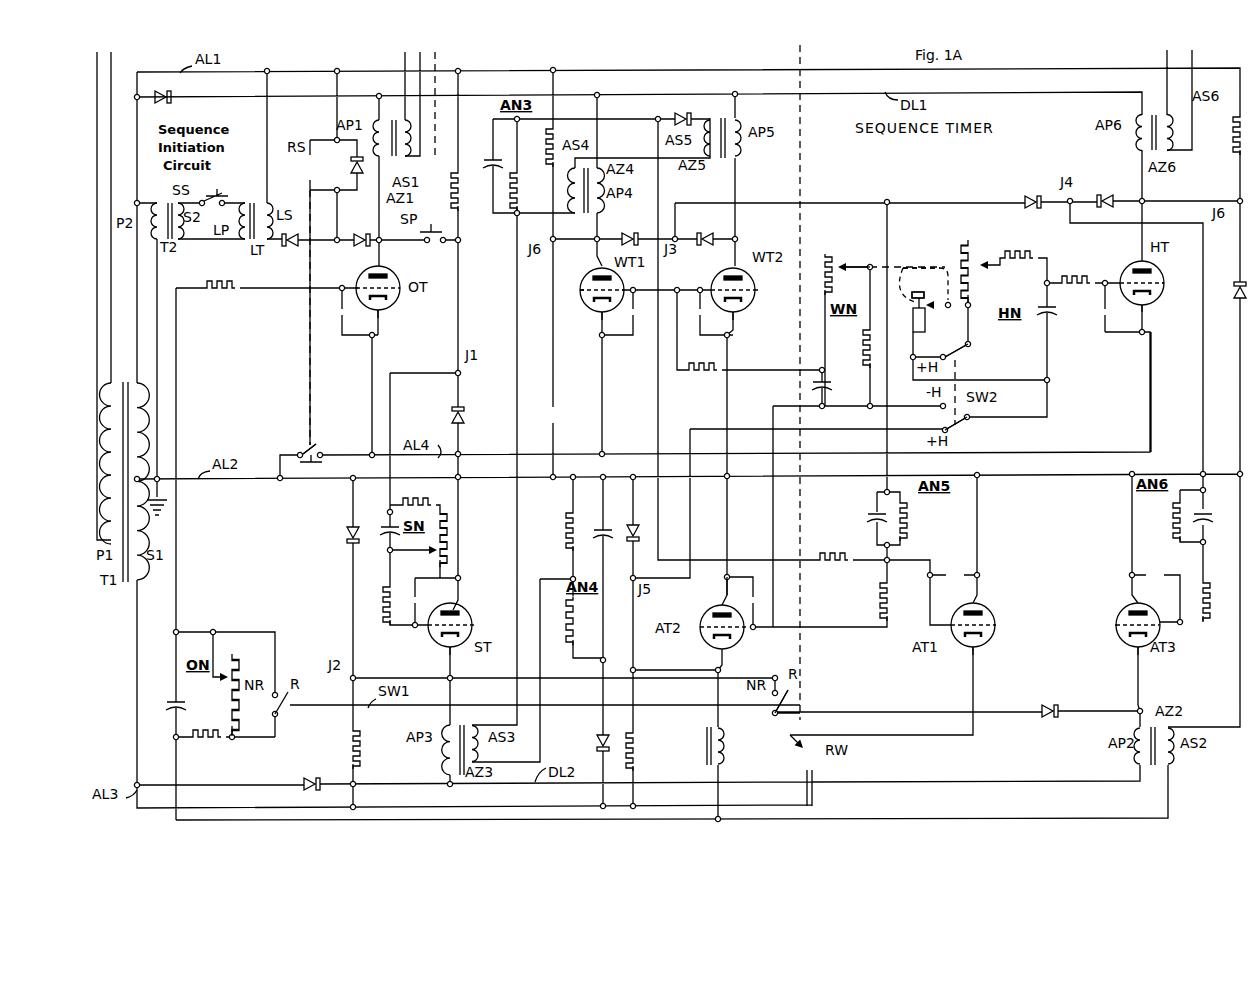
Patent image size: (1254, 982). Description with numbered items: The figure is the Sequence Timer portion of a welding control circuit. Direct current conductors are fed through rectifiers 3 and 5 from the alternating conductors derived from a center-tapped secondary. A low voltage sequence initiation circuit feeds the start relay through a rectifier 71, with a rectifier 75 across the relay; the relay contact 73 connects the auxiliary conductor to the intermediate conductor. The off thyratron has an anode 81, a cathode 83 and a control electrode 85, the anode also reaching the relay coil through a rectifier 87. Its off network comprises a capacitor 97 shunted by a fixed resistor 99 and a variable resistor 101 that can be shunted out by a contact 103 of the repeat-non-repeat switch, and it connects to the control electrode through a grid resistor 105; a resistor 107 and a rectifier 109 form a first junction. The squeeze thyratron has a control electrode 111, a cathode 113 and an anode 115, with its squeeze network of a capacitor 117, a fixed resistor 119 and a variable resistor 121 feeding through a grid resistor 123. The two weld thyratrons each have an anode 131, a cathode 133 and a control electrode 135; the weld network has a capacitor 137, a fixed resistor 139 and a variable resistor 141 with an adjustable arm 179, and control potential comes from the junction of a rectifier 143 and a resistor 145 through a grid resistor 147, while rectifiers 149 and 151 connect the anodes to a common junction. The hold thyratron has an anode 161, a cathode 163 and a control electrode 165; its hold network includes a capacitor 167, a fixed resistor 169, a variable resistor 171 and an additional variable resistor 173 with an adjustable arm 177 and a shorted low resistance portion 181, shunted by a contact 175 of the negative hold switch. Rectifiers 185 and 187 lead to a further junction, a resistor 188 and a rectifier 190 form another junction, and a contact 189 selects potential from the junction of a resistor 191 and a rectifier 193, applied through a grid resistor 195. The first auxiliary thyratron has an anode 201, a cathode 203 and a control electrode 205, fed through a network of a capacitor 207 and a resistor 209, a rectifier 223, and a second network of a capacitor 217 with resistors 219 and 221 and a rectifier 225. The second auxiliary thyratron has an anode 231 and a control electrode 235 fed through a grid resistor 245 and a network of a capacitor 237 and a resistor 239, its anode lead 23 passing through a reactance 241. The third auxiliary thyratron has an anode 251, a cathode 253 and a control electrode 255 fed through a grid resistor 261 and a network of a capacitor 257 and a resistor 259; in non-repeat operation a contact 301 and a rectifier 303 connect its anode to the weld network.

The rectifier 3 is at (168, 102).
The rectifier 5 is at (308, 778).
The anode lead 23 is at (724, 600).
The rectifier 71 is at (291, 246).
The normally open contact 73 is at (314, 456).
The rectifier 75 is at (357, 174).
The anode 81 is at (382, 274).
The cathode 83 is at (382, 306).
The control electrode 85 is at (356, 284).
The rectifier 87 is at (362, 232).
The capacitor 97 is at (170, 700).
The fixed resistor 99 is at (194, 738).
The variable resistor 101 is at (240, 700).
The contact 103 is at (281, 704).
The grid resistor 105 is at (215, 290).
The resistor 107 is at (466, 188).
The rectifier 109 is at (464, 418).
The control electrode 111 is at (472, 626).
The cathode 113 is at (456, 610).
The anode 115 is at (440, 640).
The capacitor 117 is at (386, 528).
The fixed resistor 119 is at (403, 505).
The variable resistor 121 is at (438, 566).
The grid resistor 123 is at (384, 612).
The anode 131 is at (594, 276).
The cathode 133 is at (597, 314).
The control electrode 135 is at (585, 300).
The capacitor 137 is at (828, 386).
The fixed resistor 139 is at (860, 344).
The variable resistor 141 is at (826, 253).
The rectifier 143 is at (346, 534).
The resistor 145 is at (347, 746).
The grid resistor 147 is at (712, 374).
The rectifier 149 is at (623, 235).
The rectifier 151 is at (714, 235).
The anode 161 is at (1138, 262).
The cathode 163 is at (1150, 304).
The control electrode 165 is at (1158, 282).
The capacitor 167 is at (1052, 312).
The fixed resistor 169 is at (1012, 252).
The variable resistor 171 is at (974, 242).
The additional variable resistor 173 is at (907, 266).
The contact 175 is at (958, 350).
The adjustable arm 177 is at (930, 300).
The adjustable arm 179 is at (855, 266).
The low resistance portion 181 is at (926, 322).
The rectifier 185 is at (1028, 198).
The rectifier 187 is at (1108, 195).
The resistor 188 is at (1232, 148).
The contact 189 is at (960, 424).
The rectifier 190 is at (1236, 292).
The resistor 191 is at (640, 738).
The rectifier 193 is at (628, 532).
The grid resistor 195 is at (1076, 276).
The anode 201 is at (984, 638).
The cathode 203 is at (980, 608).
The control electrode 205 is at (990, 624).
The capacitor 207 is at (492, 160).
The resistor 209 is at (512, 200).
The capacitor 217 is at (596, 538).
The resistor 219 is at (564, 522).
The resistor 221 is at (564, 640).
The rectifier 223 is at (678, 115).
The rectifier 225 is at (832, 556).
The anode 231 is at (720, 644).
The control electrode 235 is at (742, 636).
The capacitor 237 is at (874, 516).
The resistor 239 is at (907, 528).
The reactance 241 is at (712, 750).
The grid resistor 245 is at (878, 596).
The anode 251 is at (1130, 644).
The cathode 253 is at (1118, 626).
The control electrode 255 is at (1126, 608).
The capacitor 257 is at (1208, 520).
The resistor 259 is at (1172, 524).
The grid resistor 261 is at (1212, 616).
The contact 301 is at (782, 710).
The rectifier 303 is at (1060, 708).